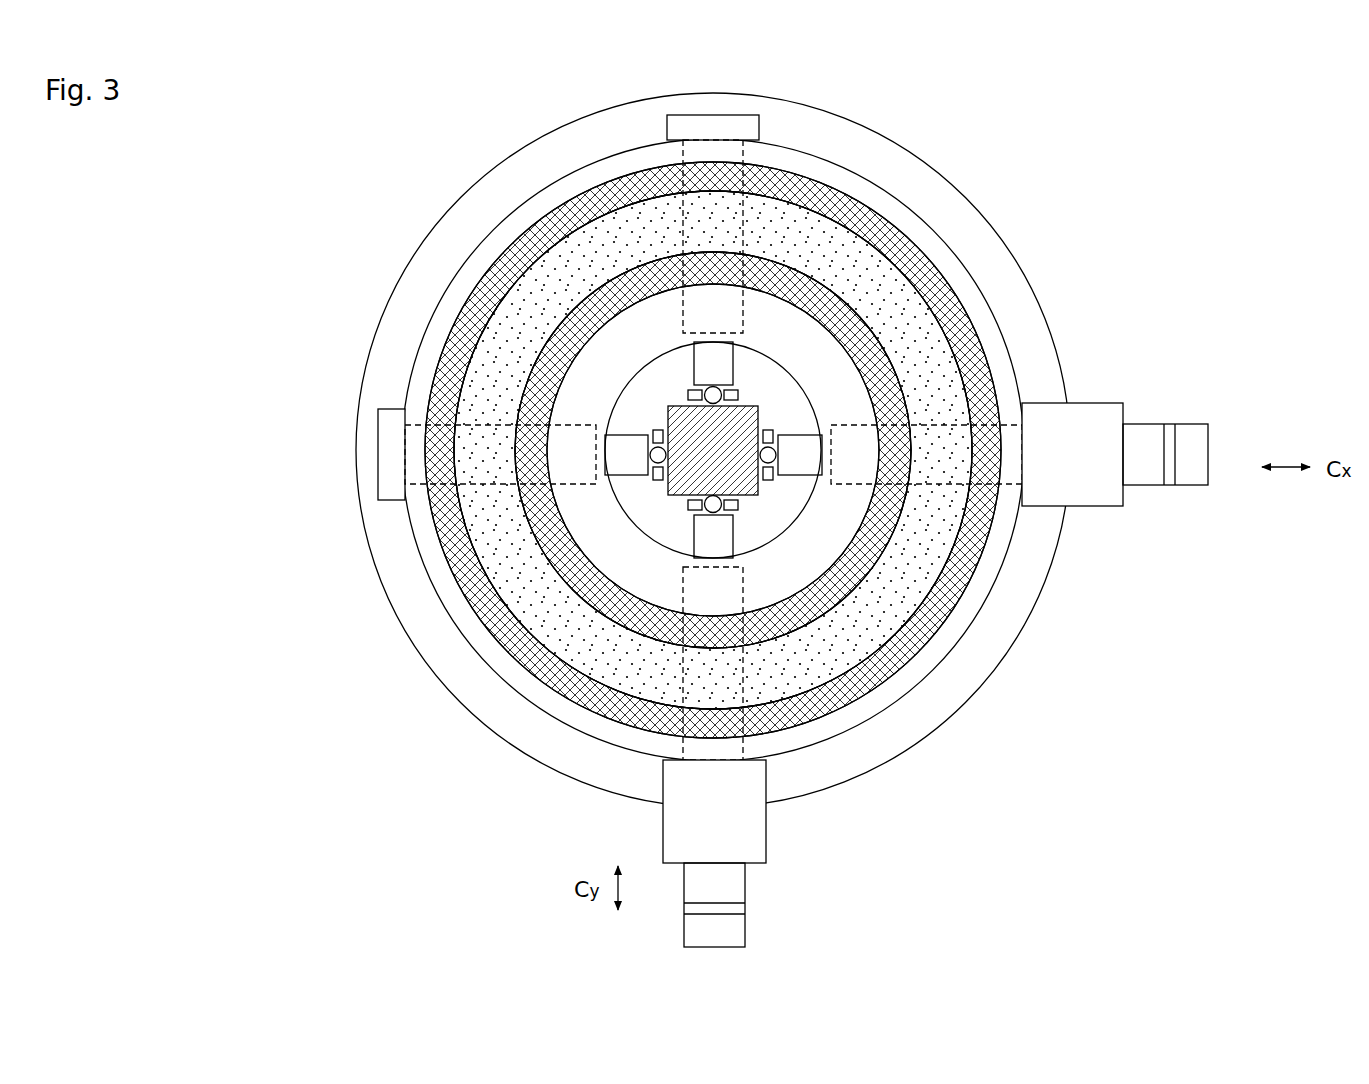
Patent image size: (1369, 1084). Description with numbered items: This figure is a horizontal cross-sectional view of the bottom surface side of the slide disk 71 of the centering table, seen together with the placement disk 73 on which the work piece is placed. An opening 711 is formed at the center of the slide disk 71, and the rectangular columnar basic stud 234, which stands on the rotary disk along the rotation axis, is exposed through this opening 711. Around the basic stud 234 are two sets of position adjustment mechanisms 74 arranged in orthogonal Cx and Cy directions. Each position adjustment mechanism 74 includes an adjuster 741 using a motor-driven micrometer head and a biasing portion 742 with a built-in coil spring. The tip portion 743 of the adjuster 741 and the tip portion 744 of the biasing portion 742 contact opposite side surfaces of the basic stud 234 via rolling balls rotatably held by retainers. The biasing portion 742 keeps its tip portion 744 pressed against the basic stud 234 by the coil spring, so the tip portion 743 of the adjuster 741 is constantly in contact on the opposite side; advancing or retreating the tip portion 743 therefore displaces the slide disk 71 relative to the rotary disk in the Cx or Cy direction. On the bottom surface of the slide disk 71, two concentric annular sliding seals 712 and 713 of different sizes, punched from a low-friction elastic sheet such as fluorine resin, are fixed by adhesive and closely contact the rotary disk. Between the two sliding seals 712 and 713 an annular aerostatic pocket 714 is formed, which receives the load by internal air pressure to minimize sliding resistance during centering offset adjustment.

The slide disk 71 is at (848, 168).
The placement disk 73 is at (975, 207).
The position adjustment mechanism 74 is at (1232, 428).
The basic stud 234 is at (678, 487).
The opening 711 is at (803, 391).
The sliding seal 712 is at (853, 593).
The sliding seal 713 is at (950, 590).
The aerostatic pocket 714 is at (937, 532).
The adjuster 741 is at (1105, 403).
The biasing portion 742 is at (684, 115).
The tip portion 743 is at (723, 520).
The tip portion 744 is at (623, 445).